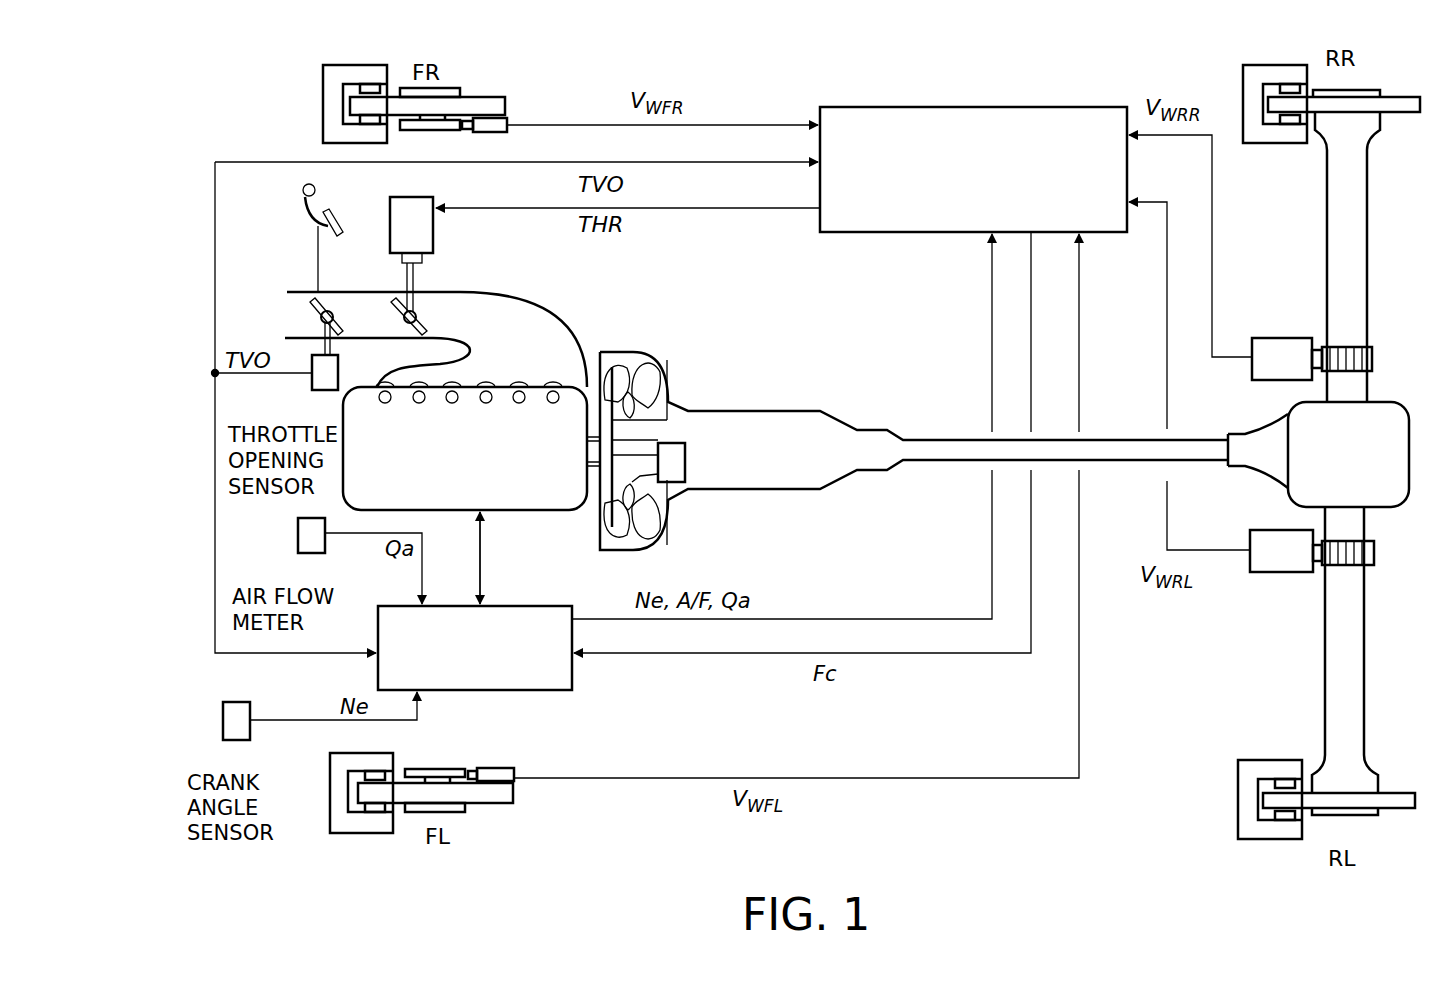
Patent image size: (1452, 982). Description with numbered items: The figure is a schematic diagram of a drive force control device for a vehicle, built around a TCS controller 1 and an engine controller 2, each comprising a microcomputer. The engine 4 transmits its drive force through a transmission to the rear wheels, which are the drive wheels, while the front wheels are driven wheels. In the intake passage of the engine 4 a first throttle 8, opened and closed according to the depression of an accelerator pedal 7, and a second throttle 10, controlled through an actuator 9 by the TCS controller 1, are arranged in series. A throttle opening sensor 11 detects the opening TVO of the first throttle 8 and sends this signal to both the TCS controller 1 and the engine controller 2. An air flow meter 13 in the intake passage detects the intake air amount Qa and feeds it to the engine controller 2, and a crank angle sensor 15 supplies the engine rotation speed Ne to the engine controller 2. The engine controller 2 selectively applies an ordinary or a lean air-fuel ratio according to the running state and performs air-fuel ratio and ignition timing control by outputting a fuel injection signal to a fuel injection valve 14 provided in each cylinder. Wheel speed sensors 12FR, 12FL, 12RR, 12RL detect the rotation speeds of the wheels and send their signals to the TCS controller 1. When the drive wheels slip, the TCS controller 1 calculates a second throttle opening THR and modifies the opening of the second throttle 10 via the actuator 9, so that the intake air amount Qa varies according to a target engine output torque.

The TCS controller 1 is at (850, 107).
The engine controller 2 is at (379, 606).
The engine 4 is at (534, 510).
The accelerator pedal 7 is at (310, 215).
The first throttle 8 is at (312, 306).
The actuator 9 is at (390, 232).
The second throttle 10 is at (422, 332).
The throttle opening sensor 11 is at (320, 398).
The wheel speed sensor 12FR is at (505, 118).
The wheel speed sensor 12FL is at (510, 784).
The wheel speed sensor 12RR is at (1278, 338).
The wheel speed sensor 12RL is at (1280, 574).
The air flow meter 13 is at (298, 545).
The fuel injection valve 14 is at (421, 403).
The crank angle sensor 15 is at (223, 733).